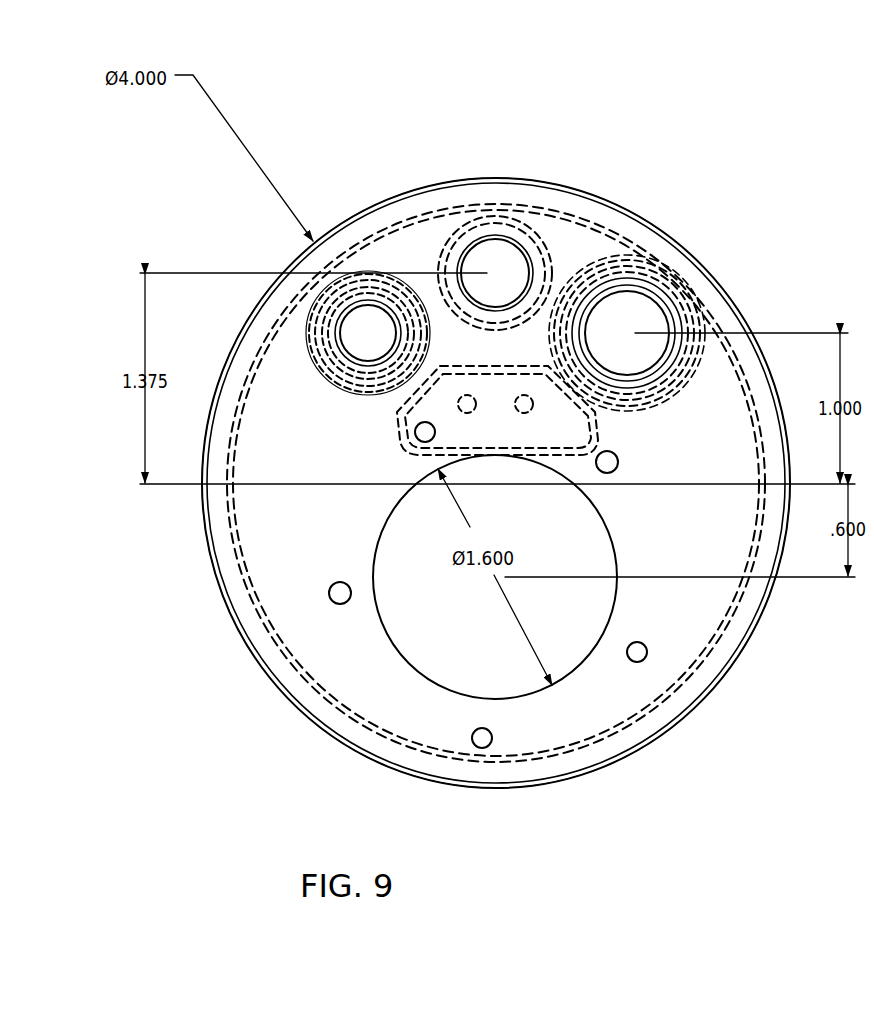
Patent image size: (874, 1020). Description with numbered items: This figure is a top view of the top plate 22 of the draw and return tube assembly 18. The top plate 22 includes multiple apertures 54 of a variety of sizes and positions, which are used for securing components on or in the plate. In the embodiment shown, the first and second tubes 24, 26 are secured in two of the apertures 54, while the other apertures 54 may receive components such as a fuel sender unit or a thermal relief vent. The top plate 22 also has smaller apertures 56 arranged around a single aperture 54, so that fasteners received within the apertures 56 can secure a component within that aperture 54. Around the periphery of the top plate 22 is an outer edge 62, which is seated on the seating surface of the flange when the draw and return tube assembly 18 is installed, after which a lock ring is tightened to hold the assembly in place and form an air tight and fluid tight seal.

The draw and return tube assembly 18 is at (652, 243).
The top plate 22 is at (652, 730).
The first tube 24 is at (357, 342).
The second tube 26 is at (644, 318).
The apertures 54 is at (390, 300).
The apertures 56 is at (350, 604).
The outer edge 62 is at (722, 668).